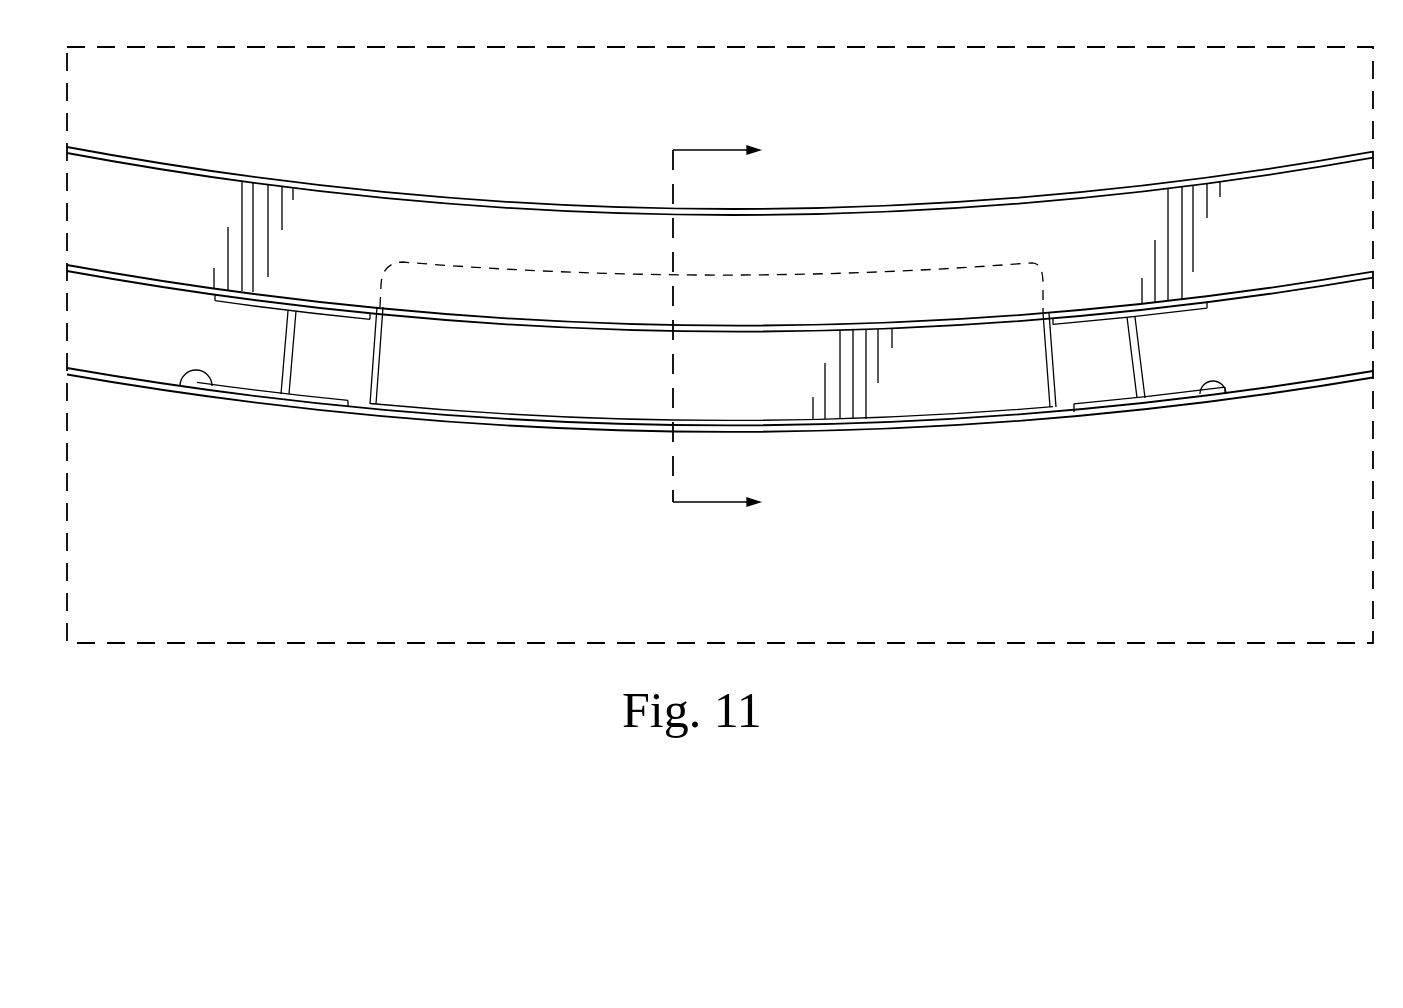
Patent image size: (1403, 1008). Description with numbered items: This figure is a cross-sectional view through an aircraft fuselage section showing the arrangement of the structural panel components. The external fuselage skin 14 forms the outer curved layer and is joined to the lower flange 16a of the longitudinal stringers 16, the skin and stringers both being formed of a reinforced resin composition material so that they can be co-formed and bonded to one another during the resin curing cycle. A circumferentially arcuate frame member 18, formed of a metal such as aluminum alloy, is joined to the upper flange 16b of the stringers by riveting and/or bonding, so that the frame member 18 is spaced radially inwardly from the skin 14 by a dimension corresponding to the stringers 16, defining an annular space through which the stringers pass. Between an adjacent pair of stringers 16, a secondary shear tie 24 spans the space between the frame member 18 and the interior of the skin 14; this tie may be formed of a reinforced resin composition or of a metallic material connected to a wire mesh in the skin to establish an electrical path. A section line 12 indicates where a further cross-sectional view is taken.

The section line 12- 12 is at (734, 326).
The external fuselage skin 14 is at (115, 378).
The longitudinal stringer 16 is at (284, 352).
The lower flange 16a is at (181, 382).
The upper flange 16b is at (219, 301).
The frame member 18 is at (1322, 247).
The secondary shear tie 24 is at (497, 388).